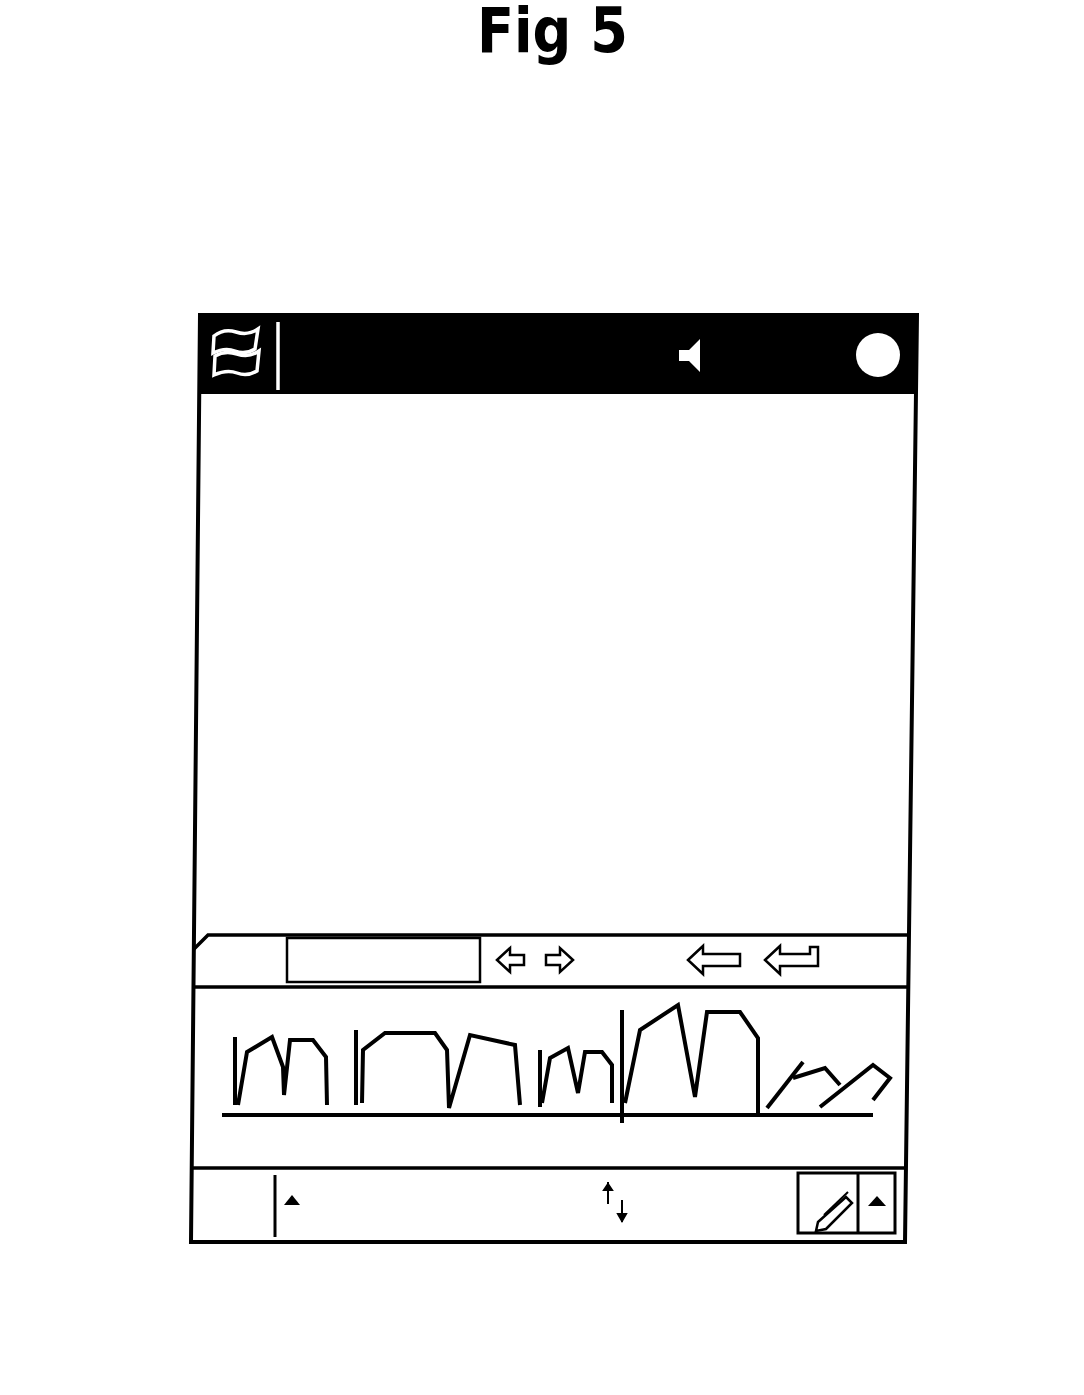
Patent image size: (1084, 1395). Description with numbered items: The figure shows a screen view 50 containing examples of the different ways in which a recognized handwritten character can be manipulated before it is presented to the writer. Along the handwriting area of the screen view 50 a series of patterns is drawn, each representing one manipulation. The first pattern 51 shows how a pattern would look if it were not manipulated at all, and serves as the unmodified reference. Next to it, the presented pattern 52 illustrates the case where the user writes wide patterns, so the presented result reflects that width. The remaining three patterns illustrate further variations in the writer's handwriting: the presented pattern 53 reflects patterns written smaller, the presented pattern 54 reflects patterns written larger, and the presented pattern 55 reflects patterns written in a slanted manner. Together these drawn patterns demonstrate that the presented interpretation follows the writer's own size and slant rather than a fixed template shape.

The screen view 50 is at (735, 272).
The first pattern 51 is at (238, 1097).
The presented pattern 52 is at (453, 1116).
The presented pattern 53 is at (585, 1116).
The presented pattern 54 is at (702, 1116).
The presented pattern 55 is at (842, 1116).